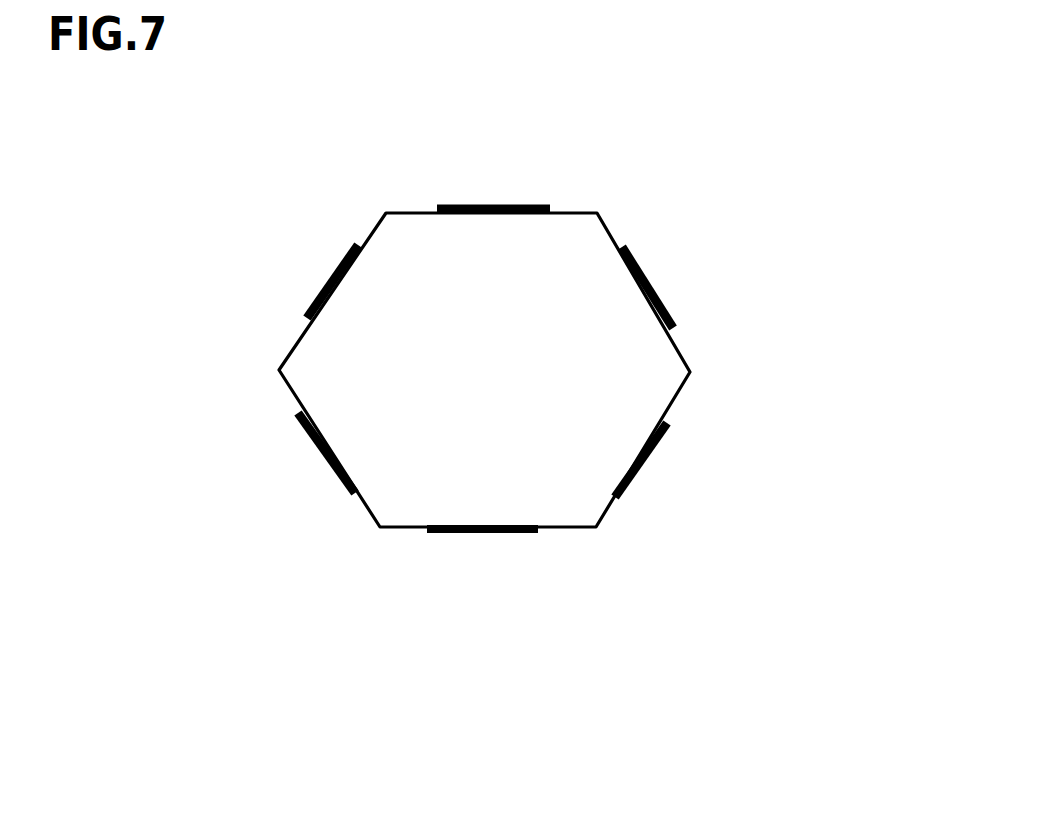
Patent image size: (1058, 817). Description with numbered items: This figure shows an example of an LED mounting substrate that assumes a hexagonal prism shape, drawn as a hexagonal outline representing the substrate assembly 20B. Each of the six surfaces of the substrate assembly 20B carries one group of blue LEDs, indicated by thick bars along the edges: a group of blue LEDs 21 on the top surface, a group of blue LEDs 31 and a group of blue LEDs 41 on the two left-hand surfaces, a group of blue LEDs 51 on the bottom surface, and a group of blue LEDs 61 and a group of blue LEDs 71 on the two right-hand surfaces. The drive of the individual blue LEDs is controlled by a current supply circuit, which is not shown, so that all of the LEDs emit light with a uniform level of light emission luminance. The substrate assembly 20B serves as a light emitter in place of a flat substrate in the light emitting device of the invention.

The substrate assembly 20B is at (390, 507).
The blue LEDs 21 is at (462, 200).
The blue LEDs 31 is at (313, 285).
The blue LEDs 41 is at (310, 448).
The blue LEDs 51 is at (450, 538).
The blue LEDs 61 is at (657, 455).
The blue LEDs 71 is at (662, 292).